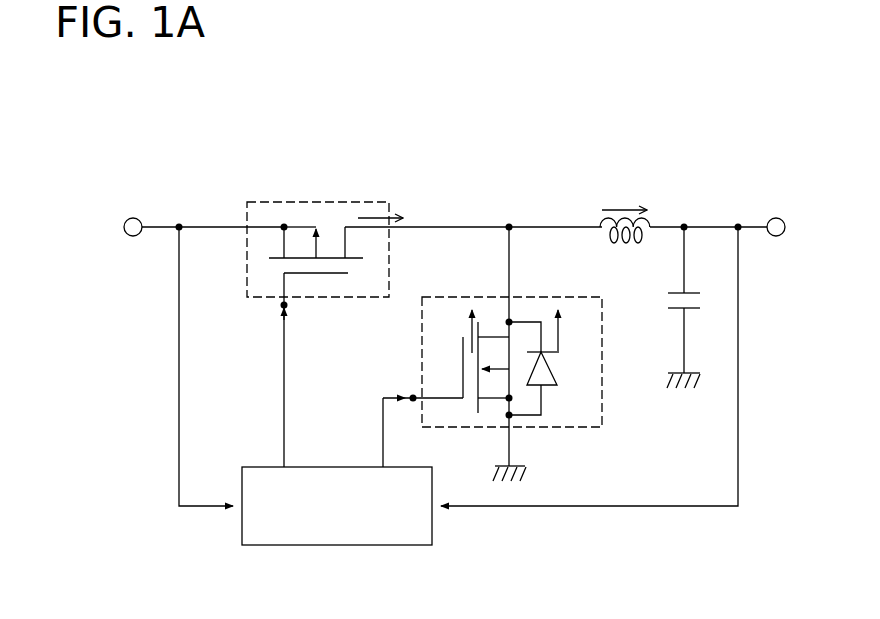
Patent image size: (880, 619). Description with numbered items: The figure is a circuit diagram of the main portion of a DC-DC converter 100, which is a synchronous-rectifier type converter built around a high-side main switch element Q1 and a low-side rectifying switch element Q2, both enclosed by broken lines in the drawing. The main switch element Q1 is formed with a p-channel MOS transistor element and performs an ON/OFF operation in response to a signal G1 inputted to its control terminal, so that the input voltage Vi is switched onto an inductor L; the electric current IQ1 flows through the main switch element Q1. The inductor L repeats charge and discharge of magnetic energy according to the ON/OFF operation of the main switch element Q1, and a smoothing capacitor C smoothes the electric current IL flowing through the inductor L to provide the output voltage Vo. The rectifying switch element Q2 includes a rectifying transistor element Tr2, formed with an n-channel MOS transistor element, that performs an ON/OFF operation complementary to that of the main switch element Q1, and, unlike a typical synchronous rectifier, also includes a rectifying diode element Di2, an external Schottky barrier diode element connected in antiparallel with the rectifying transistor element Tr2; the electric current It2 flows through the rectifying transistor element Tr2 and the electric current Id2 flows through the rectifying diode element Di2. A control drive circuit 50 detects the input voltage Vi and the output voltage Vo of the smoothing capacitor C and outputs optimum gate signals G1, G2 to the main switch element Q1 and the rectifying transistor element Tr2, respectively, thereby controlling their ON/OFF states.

The DC-DC converter 100 is at (242, 122).
The control drive circuit 50 is at (259, 467).
The main switch element Q1 is at (247, 210).
The rectifying switch element Q2 is at (447, 296).
The rectifying transistor element Tr2 is at (445, 372).
The rectifying diode element Di2 is at (568, 373).
The inductor L is at (593, 215).
The smoothing capacitor C is at (658, 288).
The gate signal G1 is at (301, 367).
The gate signal G2 is at (428, 381).
The electric current flowing through the main switch element IQ1 is at (399, 202).
The electric current flowing through the inductor IL is at (624, 197).
The electric current flowing through the rectifying transistor element It2 is at (455, 330).
The electric current flowing through the rectifying diode element Id2 is at (578, 330).
The input voltage Vi is at (138, 185).
The output voltage Vo is at (776, 187).